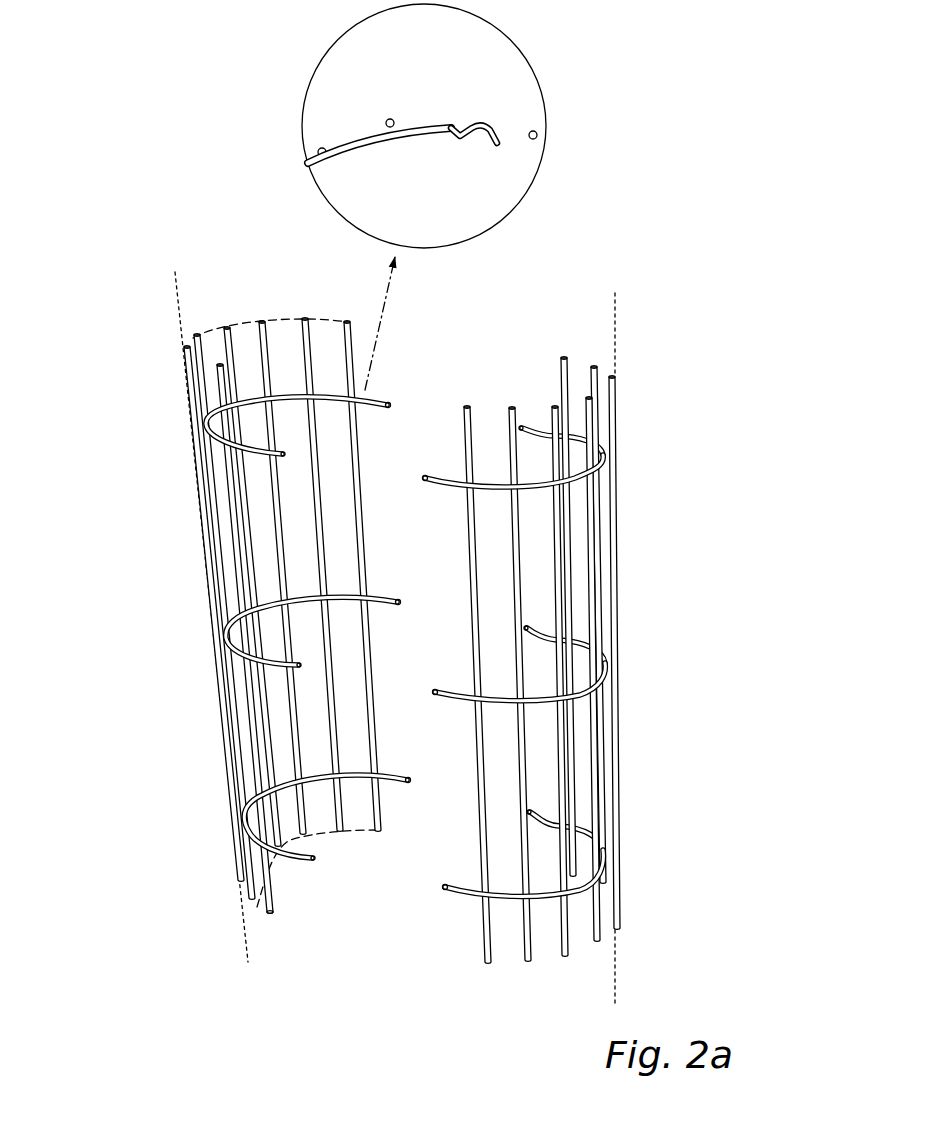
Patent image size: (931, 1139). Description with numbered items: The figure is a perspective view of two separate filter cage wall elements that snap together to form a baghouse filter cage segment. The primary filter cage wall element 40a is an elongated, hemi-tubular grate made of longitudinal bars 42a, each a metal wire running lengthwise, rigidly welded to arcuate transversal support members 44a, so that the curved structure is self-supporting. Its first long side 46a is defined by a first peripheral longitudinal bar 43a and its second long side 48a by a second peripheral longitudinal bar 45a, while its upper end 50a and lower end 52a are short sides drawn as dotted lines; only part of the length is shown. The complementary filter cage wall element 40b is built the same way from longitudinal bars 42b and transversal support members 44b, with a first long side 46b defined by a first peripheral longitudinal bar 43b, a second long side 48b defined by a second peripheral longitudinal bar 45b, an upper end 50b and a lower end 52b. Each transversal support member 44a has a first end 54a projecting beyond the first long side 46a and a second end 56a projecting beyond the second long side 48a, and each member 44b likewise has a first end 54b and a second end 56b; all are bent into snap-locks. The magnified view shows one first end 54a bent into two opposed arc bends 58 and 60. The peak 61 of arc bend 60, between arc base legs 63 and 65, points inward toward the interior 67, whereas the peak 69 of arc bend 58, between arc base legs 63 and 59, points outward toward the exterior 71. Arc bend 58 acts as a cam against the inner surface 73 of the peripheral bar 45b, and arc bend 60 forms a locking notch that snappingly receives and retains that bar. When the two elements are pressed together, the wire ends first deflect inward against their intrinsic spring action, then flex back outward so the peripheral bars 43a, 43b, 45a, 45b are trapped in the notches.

The primary filter cage wall element 40a is at (130, 357).
The complementary filter cage wall element 40b is at (656, 528).
The longitudinal bars 42a is at (360, 550).
The longitudinal bars 42b is at (477, 573).
The first peripheral longitudinal bar 43a is at (360, 526).
The first peripheral longitudinal bar 43b is at (483, 942).
The transversal support members 44a is at (247, 404).
The transversal support members 44b is at (533, 490).
The second peripheral longitudinal bar 45a is at (273, 889).
The second peripheral longitudinal bar 45b is at (567, 378).
The first long side 46a is at (388, 476).
The first long side 46b is at (470, 838).
The second long side 48a is at (283, 870).
The second long side 48b is at (547, 366).
The upper end 50a is at (240, 297).
The upper end 50b is at (500, 350).
The lower end 52a is at (262, 918).
The lower end 52b is at (550, 974).
The first end 54a is at (480, 86).
The first end 54b is at (427, 488).
The second end 56a is at (289, 444).
The second end 56b is at (531, 441).
The arc bend 58 is at (482, 118).
The arc base leg 59 is at (494, 128).
The arc bend 60 is at (457, 142).
The peak 61 is at (467, 135).
The arc base leg 63 is at (470, 140).
The arc base leg 65 is at (452, 132).
The interior 67 is at (403, 173).
The peak 69 is at (492, 120).
The exterior 71 is at (424, 126).
The inner surface 73 is at (537, 143).